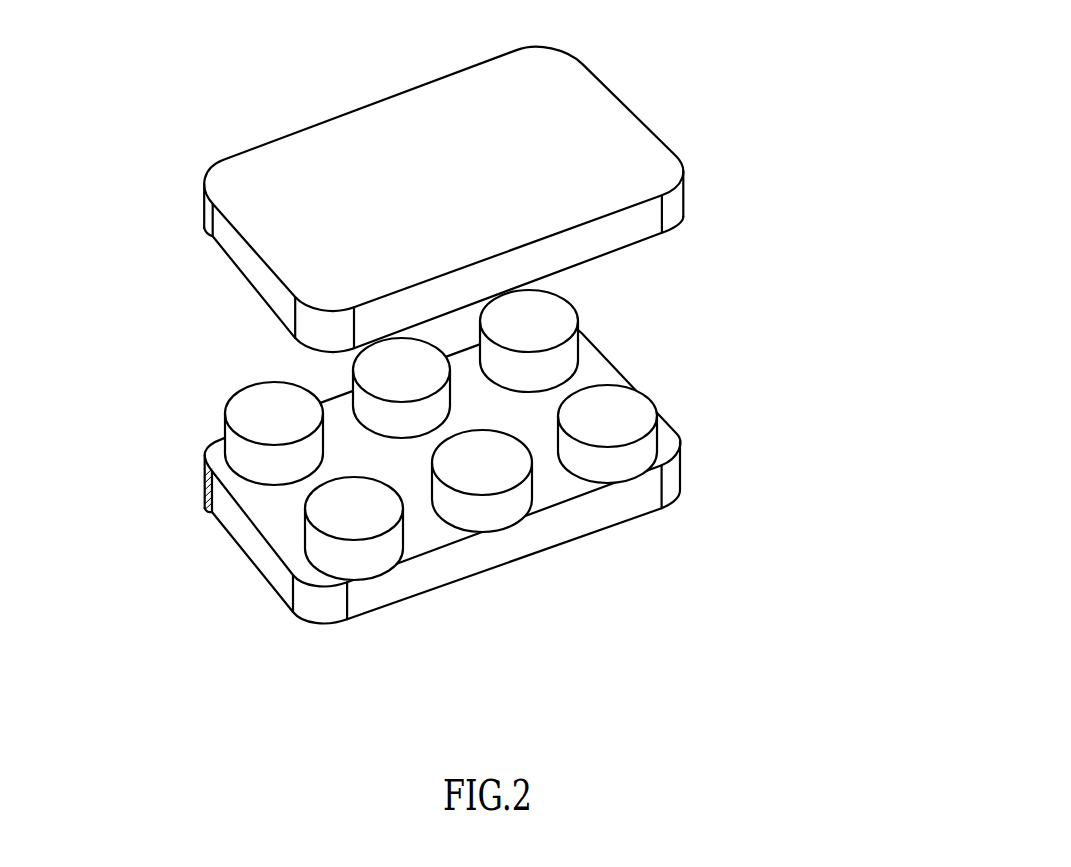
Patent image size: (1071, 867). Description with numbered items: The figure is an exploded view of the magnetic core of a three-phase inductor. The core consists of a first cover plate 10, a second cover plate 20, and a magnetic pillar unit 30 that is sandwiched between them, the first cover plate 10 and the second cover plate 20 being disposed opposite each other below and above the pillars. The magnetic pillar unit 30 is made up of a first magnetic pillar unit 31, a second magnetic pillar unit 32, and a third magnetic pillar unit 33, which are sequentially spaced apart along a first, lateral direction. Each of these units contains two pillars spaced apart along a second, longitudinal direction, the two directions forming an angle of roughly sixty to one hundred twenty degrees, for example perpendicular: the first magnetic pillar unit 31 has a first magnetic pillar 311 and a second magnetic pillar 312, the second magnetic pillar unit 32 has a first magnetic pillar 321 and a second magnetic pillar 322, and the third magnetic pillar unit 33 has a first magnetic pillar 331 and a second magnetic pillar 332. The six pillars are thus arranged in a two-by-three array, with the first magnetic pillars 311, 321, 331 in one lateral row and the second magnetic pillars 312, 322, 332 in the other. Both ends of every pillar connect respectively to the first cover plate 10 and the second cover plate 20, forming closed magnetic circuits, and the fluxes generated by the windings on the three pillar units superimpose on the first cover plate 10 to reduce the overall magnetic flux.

The first cover plate 10 is at (588, 513).
The second cover plate 20 is at (573, 88).
The magnetic pillar unit 30 is at (485, 483).
The first magnetic pillar unit 31 is at (224, 567).
The first magnetic pillar 311 is at (354, 601).
The second magnetic pillar 312 is at (255, 450).
The second magnetic pillar unit 32 is at (465, 531).
The first magnetic pillar 321 is at (477, 477).
The second magnetic pillar 322 is at (385, 407).
The third magnetic pillar unit 33 is at (662, 349).
The first magnetic pillar 331 is at (680, 408).
The second magnetic pillar 332 is at (557, 315).